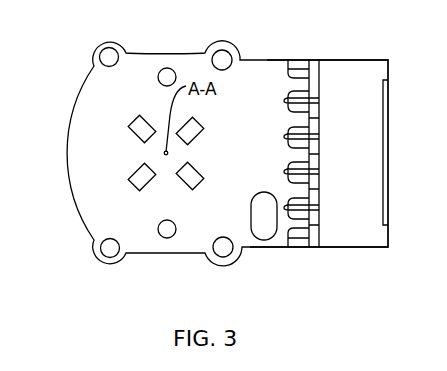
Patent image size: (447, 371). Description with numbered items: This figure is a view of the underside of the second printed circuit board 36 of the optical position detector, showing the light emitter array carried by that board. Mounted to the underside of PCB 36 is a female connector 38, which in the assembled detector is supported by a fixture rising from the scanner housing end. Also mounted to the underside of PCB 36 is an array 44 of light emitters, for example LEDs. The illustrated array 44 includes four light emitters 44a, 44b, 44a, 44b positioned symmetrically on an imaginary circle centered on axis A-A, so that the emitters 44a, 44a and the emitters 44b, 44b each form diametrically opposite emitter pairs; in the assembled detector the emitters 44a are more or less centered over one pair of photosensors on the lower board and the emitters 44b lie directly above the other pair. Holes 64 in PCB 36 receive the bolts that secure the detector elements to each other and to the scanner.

The second printed circuit board 36 is at (267, 60).
The female connector 38 is at (350, 70).
The array of light emitters 44 is at (151, 144).
The light emitter 44a is at (137, 124).
The light emitter 44b is at (205, 125).
The holes 64 is at (106, 56).